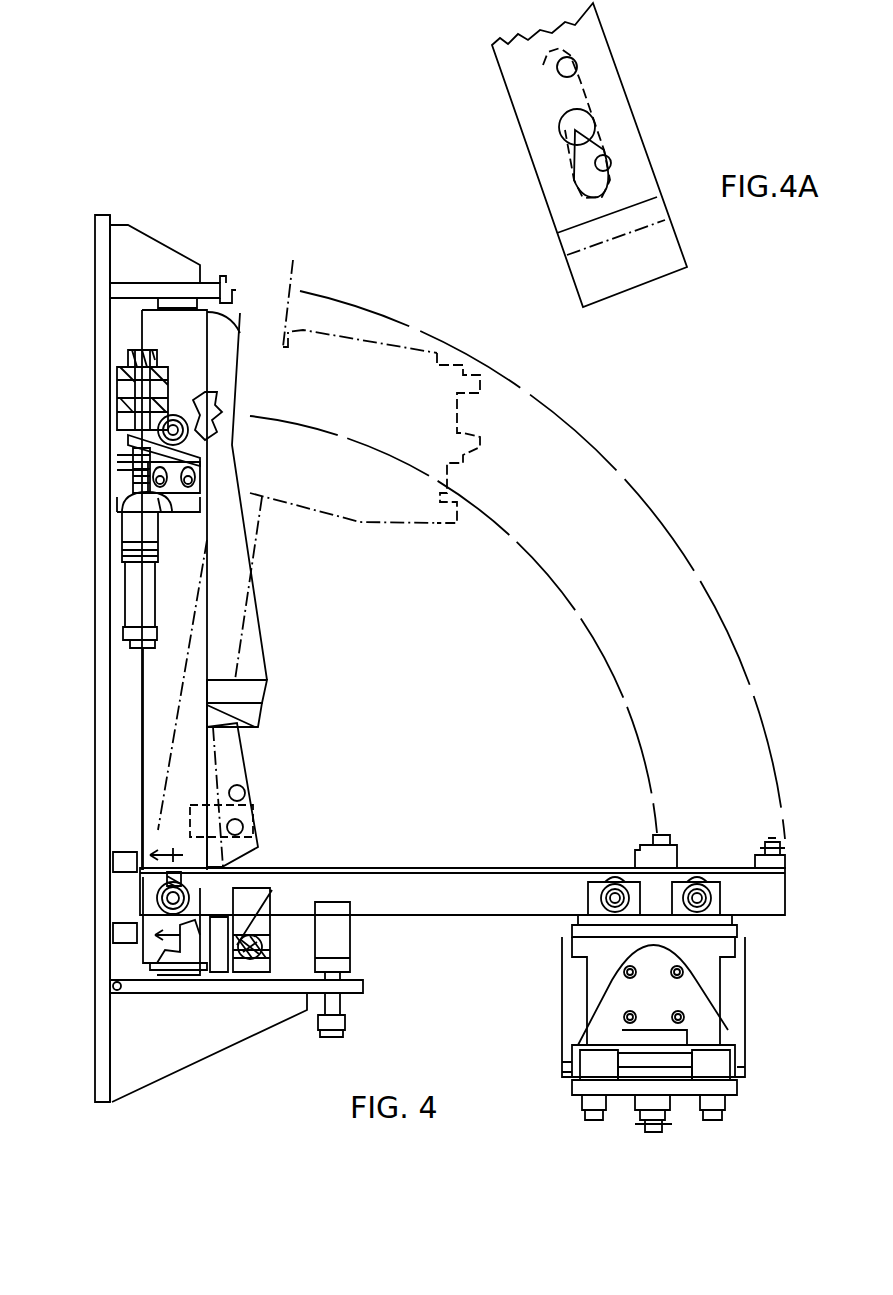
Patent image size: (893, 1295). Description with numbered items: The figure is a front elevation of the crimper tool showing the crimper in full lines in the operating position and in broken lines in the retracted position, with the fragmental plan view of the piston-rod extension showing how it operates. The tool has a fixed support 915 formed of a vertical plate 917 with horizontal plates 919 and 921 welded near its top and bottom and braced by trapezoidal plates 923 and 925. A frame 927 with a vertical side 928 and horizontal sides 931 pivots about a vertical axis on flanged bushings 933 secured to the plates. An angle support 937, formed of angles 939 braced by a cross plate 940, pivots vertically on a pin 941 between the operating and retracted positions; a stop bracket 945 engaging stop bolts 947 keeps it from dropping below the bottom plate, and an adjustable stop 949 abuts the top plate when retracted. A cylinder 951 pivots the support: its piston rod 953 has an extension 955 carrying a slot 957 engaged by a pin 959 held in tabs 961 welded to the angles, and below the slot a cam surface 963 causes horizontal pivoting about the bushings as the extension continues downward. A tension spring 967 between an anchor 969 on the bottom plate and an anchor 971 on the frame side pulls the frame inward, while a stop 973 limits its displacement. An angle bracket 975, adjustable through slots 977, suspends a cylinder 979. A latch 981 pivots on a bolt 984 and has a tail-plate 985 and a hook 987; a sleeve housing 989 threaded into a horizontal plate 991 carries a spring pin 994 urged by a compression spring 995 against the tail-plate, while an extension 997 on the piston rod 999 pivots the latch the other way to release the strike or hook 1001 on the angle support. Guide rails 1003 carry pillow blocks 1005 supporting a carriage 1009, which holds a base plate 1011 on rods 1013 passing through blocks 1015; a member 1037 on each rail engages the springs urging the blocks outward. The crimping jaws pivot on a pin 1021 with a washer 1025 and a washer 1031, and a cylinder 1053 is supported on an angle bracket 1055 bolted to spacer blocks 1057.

In FIG. 4, the support 915 is at (92, 722).
In FIG. 4, the vertical plate 917 is at (104, 652).
In FIG. 4, the horizontal plate 919 is at (112, 286).
In FIG. 4, the horizontal plate 921 is at (355, 990).
In FIG. 4, the trapezoidal plate 923 is at (133, 240).
In FIG. 4, the trapezoidal plate 925 is at (150, 1075).
In FIG. 4, the frame 927 is at (135, 811).
In FIG. 4, the vertical side 928 is at (157, 689).
In FIG. 4, the horizontal side 931 is at (222, 318).
In FIG. 4, the flanged bushing 933 is at (262, 292).
In FIG. 4, the angle support 937 is at (265, 552).
In FIG. 4, the angle 939 is at (513, 910).
In FIG. 4, the cross plate 940 is at (768, 878).
In FIG. 4, the pin 941 is at (160, 897).
In FIG. 4, the stop bracket 945 is at (342, 908).
In FIG. 4, the stop bolt 947 is at (345, 972).
In FIG. 4, the adjustable stop 949 is at (230, 292).
In FIG. 4, the cylinder 951 is at (257, 667).
In FIG. 4, the piston rod 953 is at (243, 725).
In FIG. 4, the piston-rod extension 955 is at (248, 850).
In FIG. 4A, the piston-rod extension 955 is at (510, 60).
In FIG. 4, the slot 957 is at (240, 790).
In FIG. 4A, the slot 957 is at (575, 70).
In FIG. 4, the pin 959 is at (238, 825).
In FIG. 4A, the pin 959 is at (582, 125).
In FIG. 4, the tab 961 is at (200, 802).
In FIG. 4A, the cam surface 963 is at (665, 245).
In FIG. 4, the tension spring 967 is at (163, 963).
In FIG. 4, the anchor 969 is at (112, 986).
In FIG. 4, the anchor 971 is at (206, 930).
In FIG. 4, the stop 973 is at (270, 892).
In FIG. 4, the angle bracket 975 is at (133, 508).
In FIG. 4, the slot 977 is at (195, 478).
In FIG. 4, the cylinder 979 is at (140, 602).
In FIG. 4, the latch 981 is at (250, 452).
In FIG. 4, the bolt 984 is at (178, 432).
In FIG. 4, the tail-plate 985 is at (190, 470).
In FIG. 4, the hook 987 is at (205, 460).
In FIG. 4, the sleeve housing 989 is at (128, 352).
In FIG. 4, the horizontal plate 991 is at (165, 383).
In FIG. 4, the spring pin 994 is at (130, 437).
In FIG. 4, the compression spring 995 is at (125, 408).
In FIG. 4, the extension 997 is at (140, 468).
In FIG. 4, the piston rod 999 is at (160, 497).
In FIG. 4, the strike or hook 1001 is at (215, 402).
In FIG. 4, the guide rail 1003 is at (608, 898).
In FIG. 4, the pillow block 1005 is at (712, 888).
In FIG. 4, the carriage or housing 1009 is at (756, 1005).
In FIG. 4, the base plate 1011 is at (580, 1088).
In FIG. 4, the rod 1013 is at (635, 1060).
In FIG. 4, the block 1015 is at (595, 1065).
In FIG. 4, the pin 1021 is at (480, 455).
In FIG. 4, the washer 1025 is at (672, 1098).
In FIG. 4, the washer 1031 is at (718, 1094).
In FIG. 4, the member 1037 is at (697, 890).
In FIG. 4, the cylinder 1053 is at (705, 1000).
In FIG. 4, the angle bracket 1055 is at (592, 1027).
In FIG. 4, the spacer block 1057 is at (740, 1072).